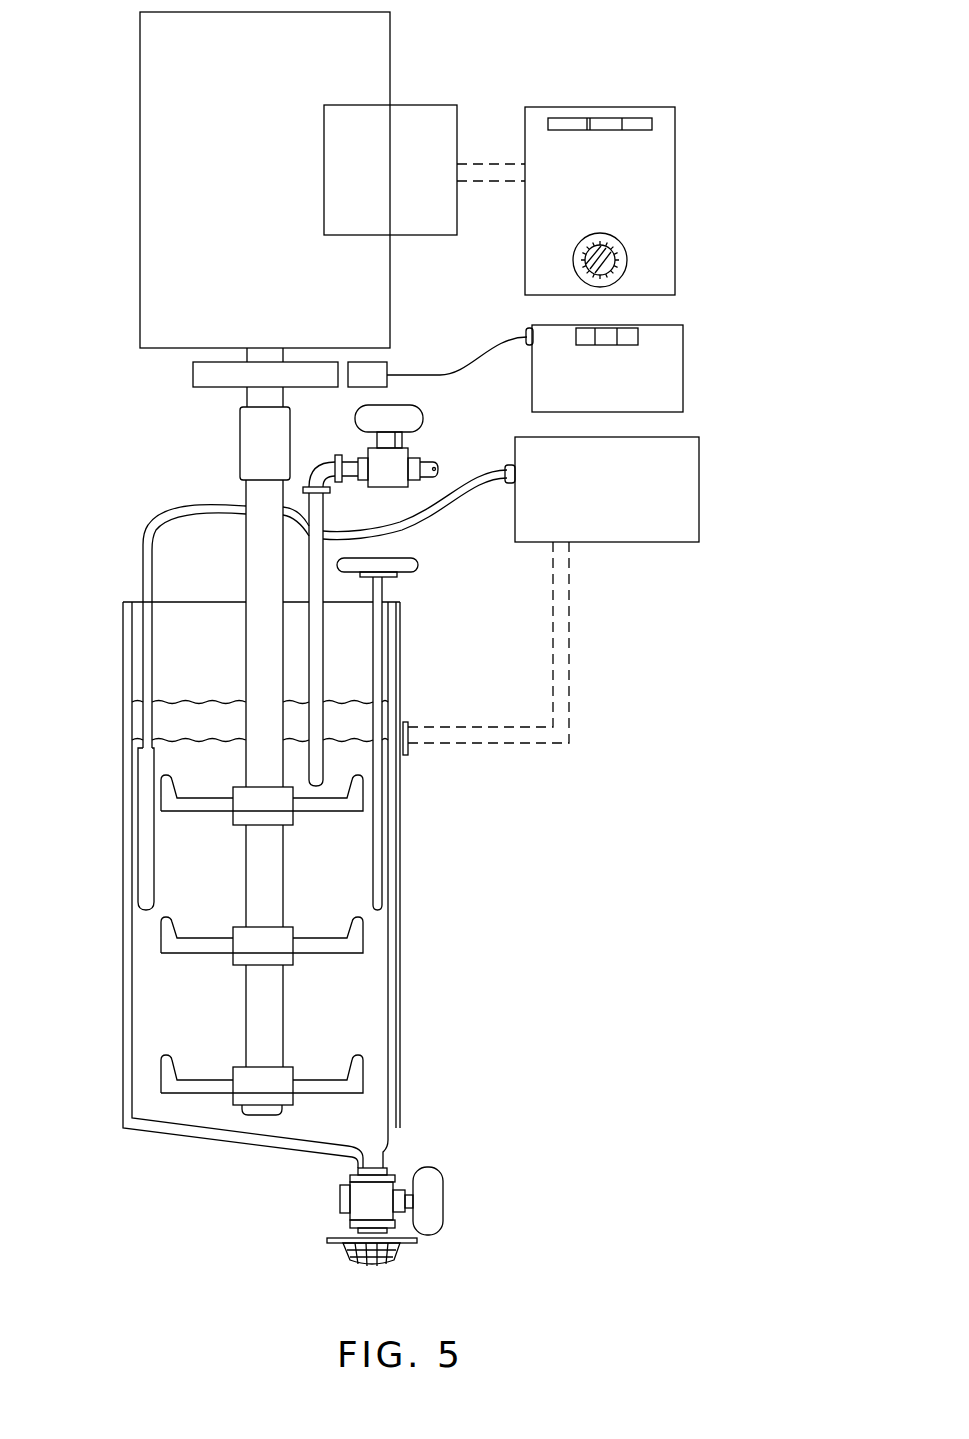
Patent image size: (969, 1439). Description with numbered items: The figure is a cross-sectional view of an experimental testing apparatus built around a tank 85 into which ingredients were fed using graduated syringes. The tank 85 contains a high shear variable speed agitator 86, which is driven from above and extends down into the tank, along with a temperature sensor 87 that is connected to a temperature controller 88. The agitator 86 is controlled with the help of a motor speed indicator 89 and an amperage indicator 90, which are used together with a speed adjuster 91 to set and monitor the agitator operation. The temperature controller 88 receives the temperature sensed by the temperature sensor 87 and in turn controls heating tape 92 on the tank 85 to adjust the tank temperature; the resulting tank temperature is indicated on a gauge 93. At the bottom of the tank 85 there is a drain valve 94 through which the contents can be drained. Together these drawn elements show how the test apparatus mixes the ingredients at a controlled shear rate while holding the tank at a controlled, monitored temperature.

The tank 85 is at (123, 1005).
The high shear variable speed agitator 86 is at (118, 209).
The temperature sensor 87 is at (143, 903).
The temperature controller 88 is at (699, 485).
The motor speed indicator 89 is at (683, 368).
The amperage indicator 90 is at (652, 124).
The speed adjuster 91 is at (628, 263).
The heating tape 92 is at (402, 848).
The gauge 93 is at (418, 563).
The drain valve 94 is at (445, 1200).